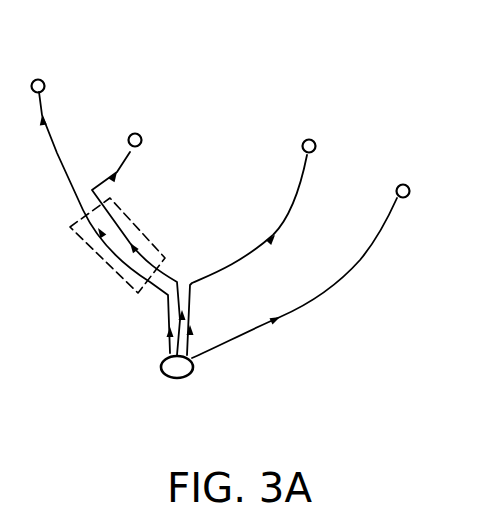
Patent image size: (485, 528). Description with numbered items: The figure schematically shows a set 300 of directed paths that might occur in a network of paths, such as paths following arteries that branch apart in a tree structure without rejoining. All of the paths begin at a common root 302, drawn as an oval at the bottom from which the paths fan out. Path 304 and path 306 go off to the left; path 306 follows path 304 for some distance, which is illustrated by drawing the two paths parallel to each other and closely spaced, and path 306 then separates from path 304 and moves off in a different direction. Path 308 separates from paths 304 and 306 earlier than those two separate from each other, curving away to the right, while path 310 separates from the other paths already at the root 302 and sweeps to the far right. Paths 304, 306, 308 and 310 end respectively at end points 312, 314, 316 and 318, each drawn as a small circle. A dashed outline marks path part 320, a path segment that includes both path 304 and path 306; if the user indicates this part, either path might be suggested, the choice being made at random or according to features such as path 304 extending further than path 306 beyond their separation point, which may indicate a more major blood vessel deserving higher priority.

The set of directed paths 300 is at (282, 86).
The root 302 is at (188, 377).
The path 304 is at (52, 140).
The path 306 is at (123, 160).
The path 308 is at (302, 188).
The path 310 is at (373, 245).
The end point 312 is at (43, 79).
The end point 314 is at (140, 133).
The end point 316 is at (315, 141).
The end point 318 is at (409, 186).
The path part 320 is at (90, 258).